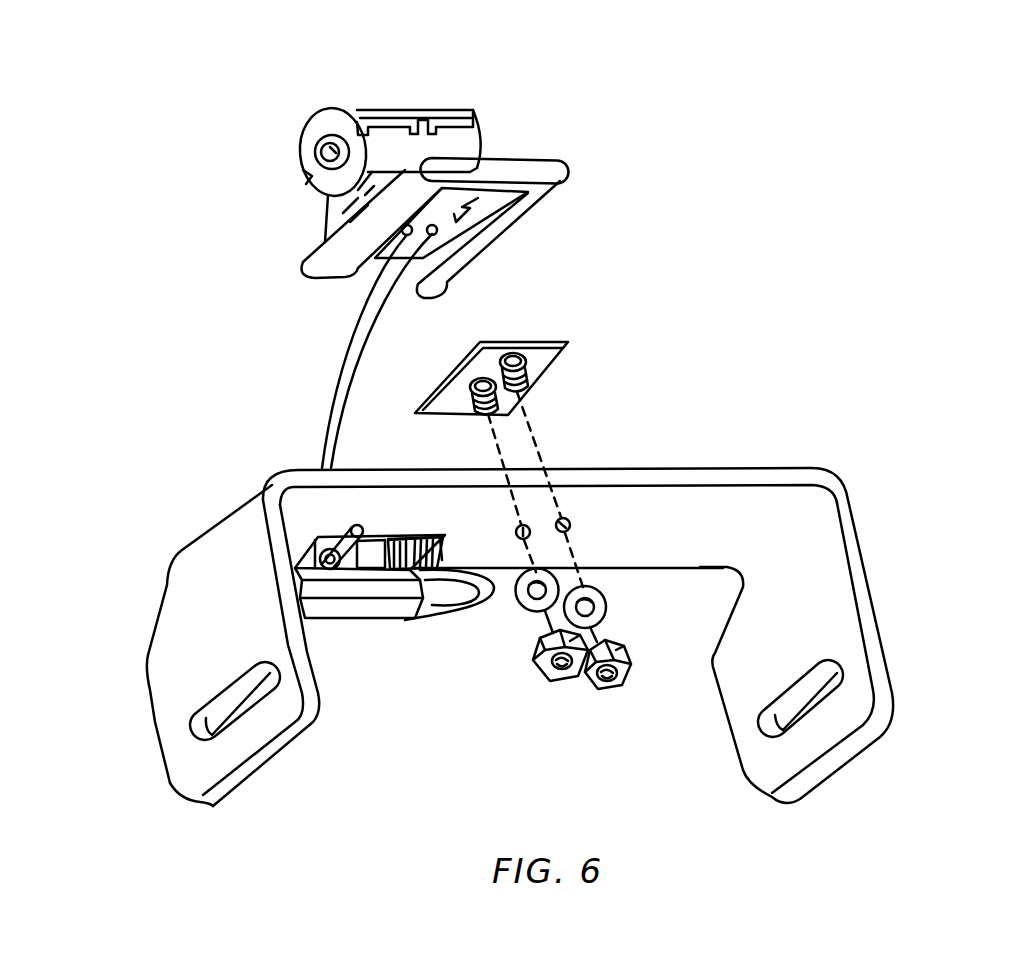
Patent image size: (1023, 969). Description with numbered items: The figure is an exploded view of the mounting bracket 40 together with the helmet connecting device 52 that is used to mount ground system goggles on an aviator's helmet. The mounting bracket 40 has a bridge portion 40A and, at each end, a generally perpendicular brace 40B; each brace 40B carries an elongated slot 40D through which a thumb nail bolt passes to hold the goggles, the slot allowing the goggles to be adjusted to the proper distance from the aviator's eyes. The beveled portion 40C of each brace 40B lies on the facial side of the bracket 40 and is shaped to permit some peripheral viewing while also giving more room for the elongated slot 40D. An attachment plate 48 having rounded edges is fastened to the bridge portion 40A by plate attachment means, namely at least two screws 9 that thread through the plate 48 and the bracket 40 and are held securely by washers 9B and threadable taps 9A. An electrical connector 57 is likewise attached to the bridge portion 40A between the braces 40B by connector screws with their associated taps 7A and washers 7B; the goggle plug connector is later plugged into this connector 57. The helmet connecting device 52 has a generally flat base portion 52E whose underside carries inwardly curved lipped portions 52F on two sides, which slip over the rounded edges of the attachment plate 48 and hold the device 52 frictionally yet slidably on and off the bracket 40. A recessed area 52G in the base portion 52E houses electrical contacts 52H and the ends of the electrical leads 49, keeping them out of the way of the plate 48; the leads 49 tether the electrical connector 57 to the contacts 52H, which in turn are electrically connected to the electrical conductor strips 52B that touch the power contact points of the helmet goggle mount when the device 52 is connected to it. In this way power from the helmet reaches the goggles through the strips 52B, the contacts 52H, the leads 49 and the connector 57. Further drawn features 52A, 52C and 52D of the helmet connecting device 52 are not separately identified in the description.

The mounting bracket 40 is at (517, 595).
The bridge portion 40A is at (703, 500).
The braces 40B is at (165, 768).
The beveled portion 40C is at (165, 622).
The elongated slot 40D is at (185, 705).
The taps 7A is at (412, 600).
The washers 7B is at (438, 536).
The electrical connector 57 is at (445, 536).
The electrical leads 49 is at (338, 365).
The attachment plate 48 is at (532, 342).
The screws 9 is at (480, 410).
The threadable taps 9A is at (555, 681).
The washers 9B is at (532, 610).
The helmet connecting device 52 is at (456, 175).
The cylindrical hub 52A is at (328, 140).
The electrical conductor strips 52B is at (325, 238).
The key rail 52C is at (480, 112).
The bore 52D is at (300, 183).
The flat base portion 52E is at (555, 168).
The inwardly curved lipped portions 52F is at (350, 280).
The recessed area 52G is at (548, 200).
The electrical contacts 52H is at (530, 240).